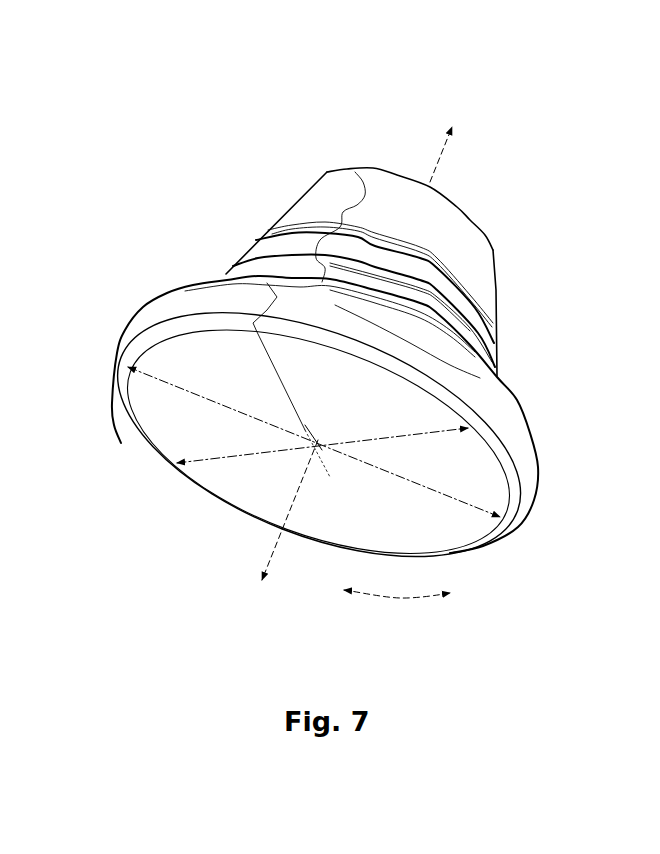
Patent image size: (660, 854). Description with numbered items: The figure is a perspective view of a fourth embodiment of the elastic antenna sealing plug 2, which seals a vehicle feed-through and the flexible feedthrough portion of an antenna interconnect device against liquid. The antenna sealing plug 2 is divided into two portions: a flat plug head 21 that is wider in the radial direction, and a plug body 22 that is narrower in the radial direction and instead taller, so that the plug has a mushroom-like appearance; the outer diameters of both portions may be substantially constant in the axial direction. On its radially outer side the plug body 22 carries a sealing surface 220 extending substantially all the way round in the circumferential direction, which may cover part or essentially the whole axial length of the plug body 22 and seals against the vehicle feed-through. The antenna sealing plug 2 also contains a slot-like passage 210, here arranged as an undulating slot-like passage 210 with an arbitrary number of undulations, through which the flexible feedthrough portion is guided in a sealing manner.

The antenna sealing plug 2 is at (195, 68).
The plug head 21 is at (137, 260).
The plug body 22 is at (207, 128).
The slot-like passage 210 is at (308, 408).
The sealing surface 220 is at (497, 340).